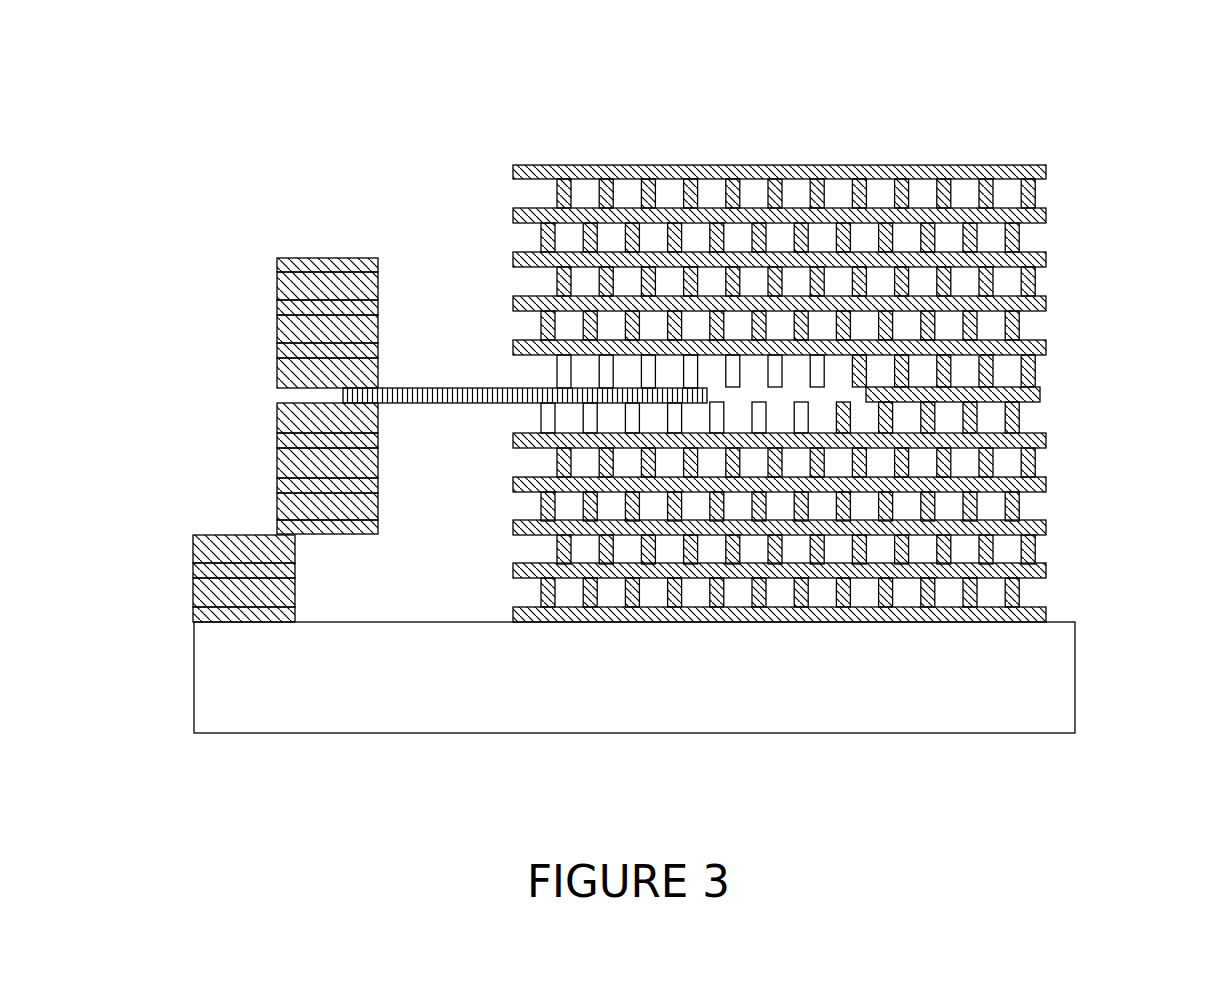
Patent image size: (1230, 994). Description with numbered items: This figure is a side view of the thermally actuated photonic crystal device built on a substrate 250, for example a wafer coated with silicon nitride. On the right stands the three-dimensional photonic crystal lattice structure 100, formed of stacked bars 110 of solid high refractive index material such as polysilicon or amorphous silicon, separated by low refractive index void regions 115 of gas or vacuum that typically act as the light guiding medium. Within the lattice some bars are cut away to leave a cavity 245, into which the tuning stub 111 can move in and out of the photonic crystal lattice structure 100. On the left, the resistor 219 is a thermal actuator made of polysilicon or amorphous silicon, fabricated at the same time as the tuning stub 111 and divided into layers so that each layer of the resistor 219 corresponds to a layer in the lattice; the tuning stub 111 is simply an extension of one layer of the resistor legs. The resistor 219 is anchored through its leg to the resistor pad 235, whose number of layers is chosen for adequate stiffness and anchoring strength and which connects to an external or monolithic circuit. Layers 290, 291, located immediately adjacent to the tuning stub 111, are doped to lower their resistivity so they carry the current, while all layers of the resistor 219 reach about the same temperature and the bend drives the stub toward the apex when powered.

The photonic crystal lattice structure 100 is at (843, 332).
The bars 110 is at (1046, 172).
The void regions 115 is at (1040, 232).
The cavity 245 is at (840, 400).
The tuning stub 111 is at (458, 388).
The resistor 219 is at (322, 258).
The layer 290 is at (378, 503).
The layer 291 is at (378, 530).
The resistor pad 235 is at (215, 535).
The substrate 250 is at (372, 725).